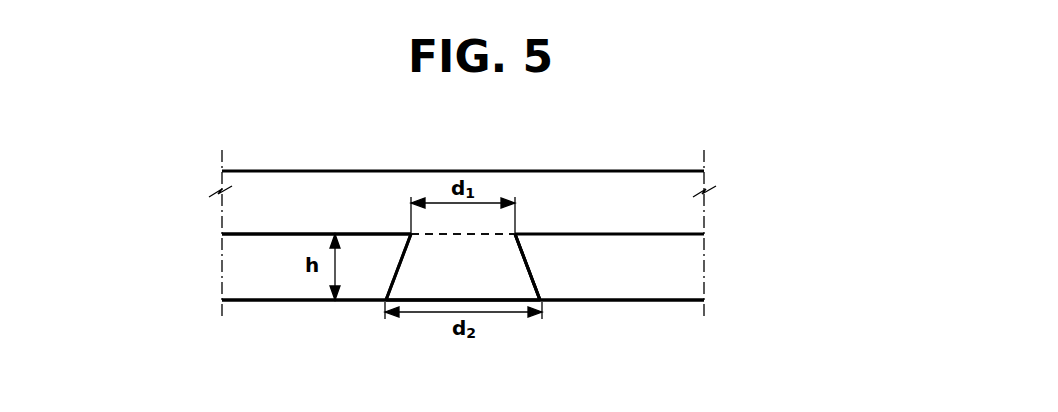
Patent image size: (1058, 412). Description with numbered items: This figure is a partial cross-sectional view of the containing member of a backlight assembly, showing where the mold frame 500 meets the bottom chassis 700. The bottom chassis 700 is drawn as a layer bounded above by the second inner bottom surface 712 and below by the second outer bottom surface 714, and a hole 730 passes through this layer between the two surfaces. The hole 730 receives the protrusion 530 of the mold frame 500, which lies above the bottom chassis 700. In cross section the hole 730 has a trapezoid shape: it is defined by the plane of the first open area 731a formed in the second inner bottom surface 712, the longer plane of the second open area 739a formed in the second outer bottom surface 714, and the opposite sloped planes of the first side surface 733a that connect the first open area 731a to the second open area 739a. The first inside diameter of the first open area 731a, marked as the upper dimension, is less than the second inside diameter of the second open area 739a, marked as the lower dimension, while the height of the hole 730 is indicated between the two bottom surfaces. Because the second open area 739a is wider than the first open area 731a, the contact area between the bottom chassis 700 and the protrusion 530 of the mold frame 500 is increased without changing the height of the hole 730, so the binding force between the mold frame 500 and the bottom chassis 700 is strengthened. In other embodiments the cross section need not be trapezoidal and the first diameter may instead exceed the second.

The mold frame 500 is at (208, 197).
The bottom chassis 700 is at (208, 257).
The second inner bottom surface 712 is at (292, 233).
The second outer bottom surface 714 is at (290, 302).
The protrusion 530 is at (430, 250).
The hole 730 is at (820, 210).
The first open area 731a is at (493, 233).
The first side surface 733a is at (527, 258).
The second open area 739a is at (495, 300).